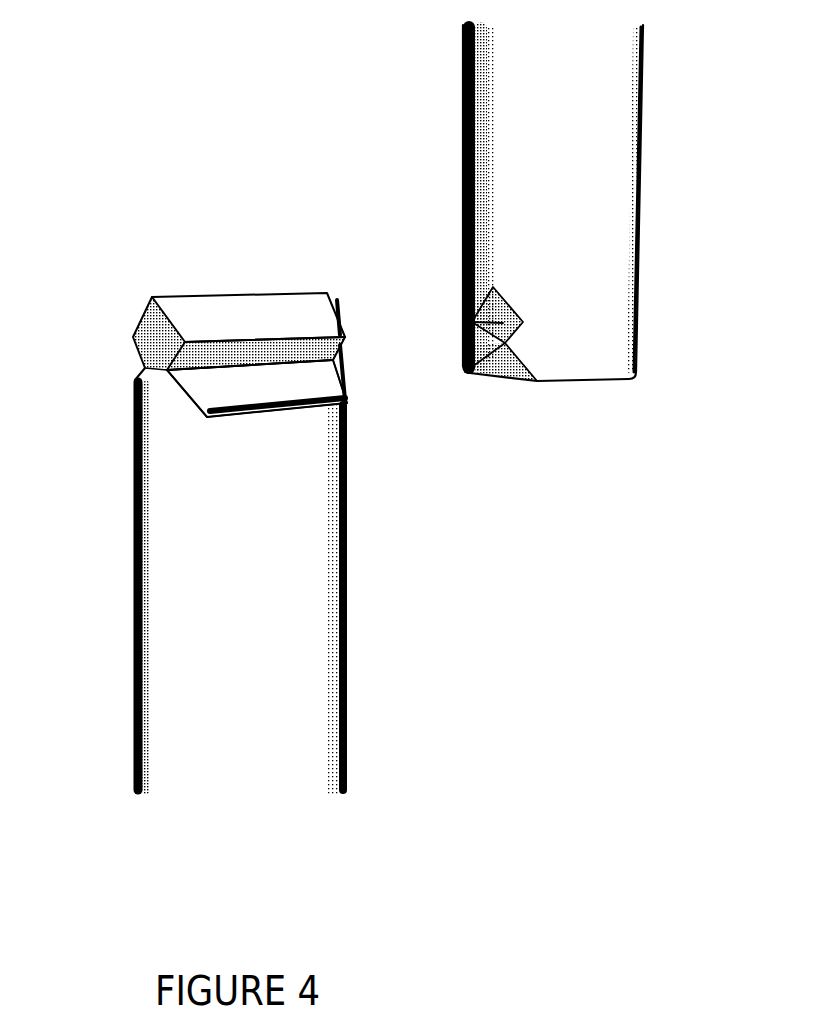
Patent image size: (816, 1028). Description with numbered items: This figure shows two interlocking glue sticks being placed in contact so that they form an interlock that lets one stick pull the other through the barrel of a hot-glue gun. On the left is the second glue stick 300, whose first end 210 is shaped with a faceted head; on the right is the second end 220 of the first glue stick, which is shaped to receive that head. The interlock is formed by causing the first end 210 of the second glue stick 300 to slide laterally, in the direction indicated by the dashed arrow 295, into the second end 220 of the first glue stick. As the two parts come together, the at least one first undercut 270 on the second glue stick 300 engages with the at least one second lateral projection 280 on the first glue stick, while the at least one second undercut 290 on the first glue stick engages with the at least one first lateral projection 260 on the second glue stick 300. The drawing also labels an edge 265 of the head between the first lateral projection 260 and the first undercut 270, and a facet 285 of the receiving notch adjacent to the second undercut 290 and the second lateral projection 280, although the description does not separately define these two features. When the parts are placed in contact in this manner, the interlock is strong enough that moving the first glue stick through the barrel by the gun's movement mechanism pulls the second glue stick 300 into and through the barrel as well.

The first end 210 is at (228, 287).
The second end 220 is at (557, 388).
The first lateral projection 260 is at (185, 343).
The second edge 265 is at (165, 372).
The first undercut 270 is at (220, 378).
The second lateral projection 280 is at (505, 343).
The notch facet 285 is at (523, 322).
The second undercut 290 is at (503, 323).
The lateral sliding direction 295 is at (468, 428).
The second glue stick 300 is at (347, 642).